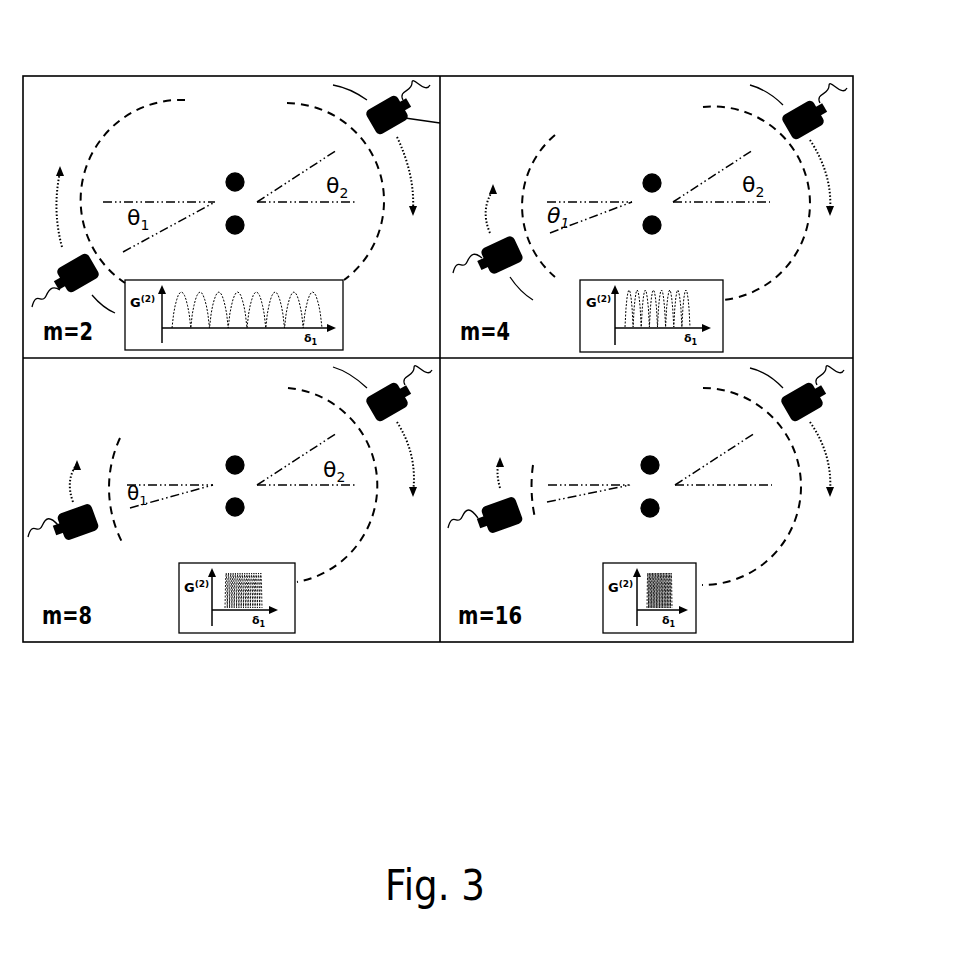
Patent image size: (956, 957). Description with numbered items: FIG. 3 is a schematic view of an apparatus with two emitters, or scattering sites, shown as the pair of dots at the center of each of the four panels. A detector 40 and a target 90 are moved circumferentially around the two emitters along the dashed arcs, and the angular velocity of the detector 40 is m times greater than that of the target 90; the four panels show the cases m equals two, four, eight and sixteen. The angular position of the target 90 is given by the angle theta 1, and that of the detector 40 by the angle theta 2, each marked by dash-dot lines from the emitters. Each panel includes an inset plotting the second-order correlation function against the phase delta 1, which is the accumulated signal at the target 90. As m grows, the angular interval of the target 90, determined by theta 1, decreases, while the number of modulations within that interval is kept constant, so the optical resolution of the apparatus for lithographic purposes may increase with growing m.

The target 90 is at (72, 253).
The detector 40 is at (390, 97).
The angle theta-1 of source 1 is at (552, 488).
The angle theta-2 of detector 2 is at (723, 459).